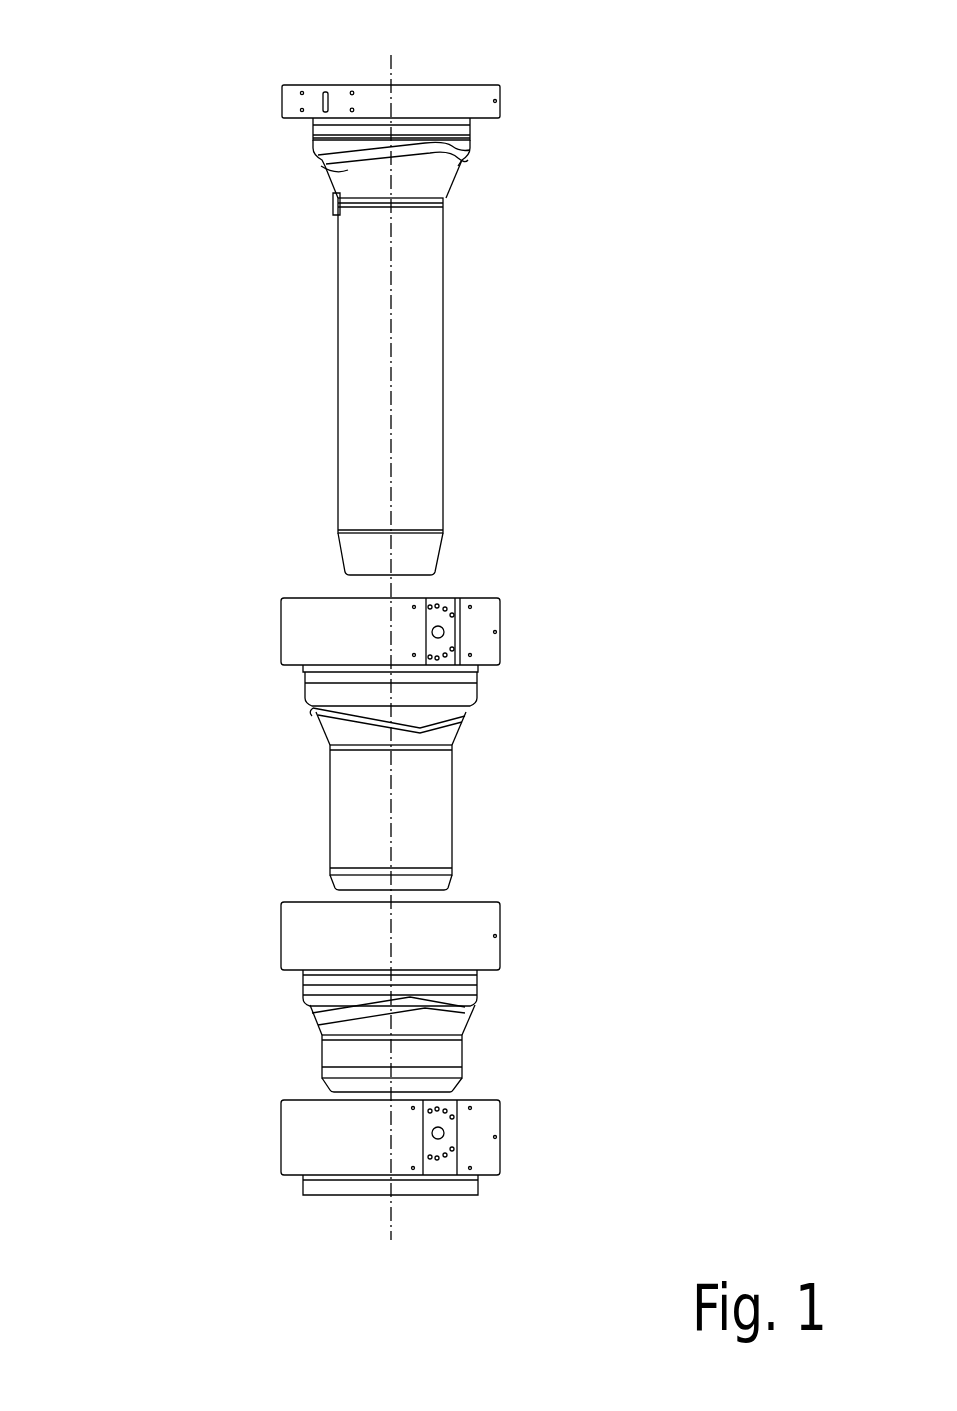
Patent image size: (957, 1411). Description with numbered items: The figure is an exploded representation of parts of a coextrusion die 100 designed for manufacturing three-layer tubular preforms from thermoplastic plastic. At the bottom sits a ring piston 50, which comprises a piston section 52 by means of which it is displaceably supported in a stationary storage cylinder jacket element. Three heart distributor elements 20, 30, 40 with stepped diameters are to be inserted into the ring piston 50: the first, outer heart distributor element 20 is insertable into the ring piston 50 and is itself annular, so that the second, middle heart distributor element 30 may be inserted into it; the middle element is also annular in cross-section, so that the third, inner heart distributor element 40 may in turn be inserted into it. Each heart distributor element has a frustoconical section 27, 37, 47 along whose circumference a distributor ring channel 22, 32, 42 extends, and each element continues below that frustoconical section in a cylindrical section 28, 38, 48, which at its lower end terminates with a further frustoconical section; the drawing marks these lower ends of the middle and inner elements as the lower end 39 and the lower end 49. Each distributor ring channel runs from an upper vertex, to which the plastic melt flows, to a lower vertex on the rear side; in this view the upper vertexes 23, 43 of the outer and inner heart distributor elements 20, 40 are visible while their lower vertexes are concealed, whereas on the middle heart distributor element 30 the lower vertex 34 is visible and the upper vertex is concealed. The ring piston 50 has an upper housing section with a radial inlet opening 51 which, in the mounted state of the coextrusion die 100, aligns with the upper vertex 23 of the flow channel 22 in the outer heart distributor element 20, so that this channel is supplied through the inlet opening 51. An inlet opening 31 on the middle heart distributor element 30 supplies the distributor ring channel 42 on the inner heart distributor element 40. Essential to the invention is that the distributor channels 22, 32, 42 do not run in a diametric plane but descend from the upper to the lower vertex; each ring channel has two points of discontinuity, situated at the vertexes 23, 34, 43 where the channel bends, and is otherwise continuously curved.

The coextrusion die 100 is at (605, 46).
The third heart distributor element 40 is at (282, 95).
The upper vertex 43 is at (470, 142).
The distributor ring channel 42 is at (340, 160).
The frustoconical section 47 is at (450, 187).
The cylindrical section 48 is at (443, 329).
The tapered lower end 49 is at (433, 552).
The second heart distributor element 30 is at (282, 632).
The inlet opening 31 is at (444, 630).
The distributor ring channel 32 is at (310, 712).
The lower vertex 34 is at (470, 713).
The frustoconical section 37 is at (450, 738).
The cylindrical section 38 is at (440, 808).
The tapered lower end 39 is at (440, 882).
The first heart distributor element 20 is at (282, 940).
The distributor ring channel 22 is at (312, 1020).
The frustoconical section 27 is at (462, 1028).
The cylindrical section 28 is at (462, 1056).
The ring piston 50 is at (282, 1135).
The radial inlet opening 51 is at (444, 1133).
The piston section 52 is at (378, 1190).
The upper vertex 23 is at (423, 995).